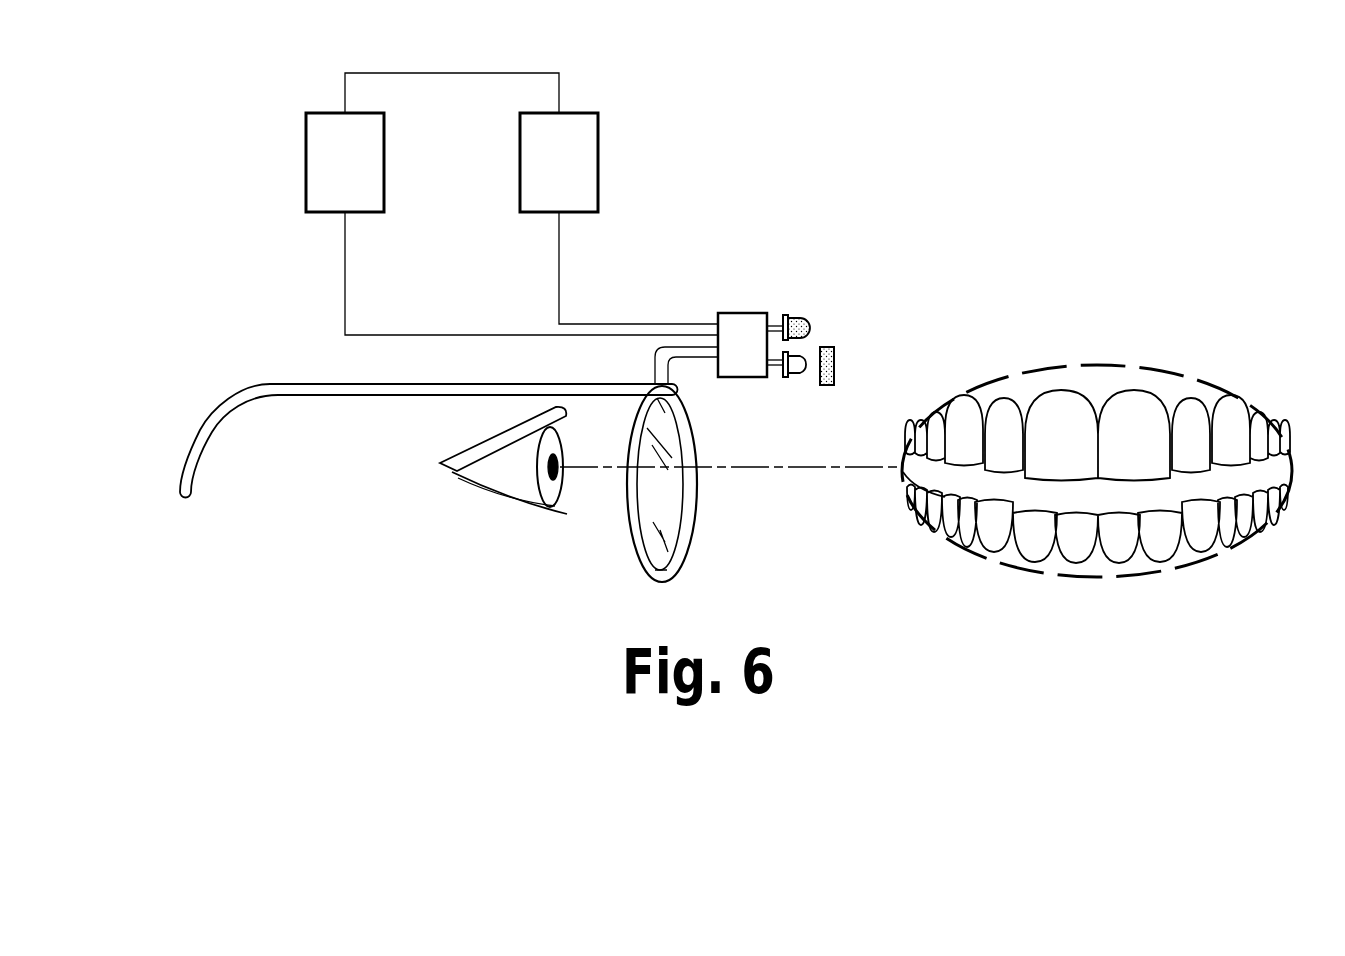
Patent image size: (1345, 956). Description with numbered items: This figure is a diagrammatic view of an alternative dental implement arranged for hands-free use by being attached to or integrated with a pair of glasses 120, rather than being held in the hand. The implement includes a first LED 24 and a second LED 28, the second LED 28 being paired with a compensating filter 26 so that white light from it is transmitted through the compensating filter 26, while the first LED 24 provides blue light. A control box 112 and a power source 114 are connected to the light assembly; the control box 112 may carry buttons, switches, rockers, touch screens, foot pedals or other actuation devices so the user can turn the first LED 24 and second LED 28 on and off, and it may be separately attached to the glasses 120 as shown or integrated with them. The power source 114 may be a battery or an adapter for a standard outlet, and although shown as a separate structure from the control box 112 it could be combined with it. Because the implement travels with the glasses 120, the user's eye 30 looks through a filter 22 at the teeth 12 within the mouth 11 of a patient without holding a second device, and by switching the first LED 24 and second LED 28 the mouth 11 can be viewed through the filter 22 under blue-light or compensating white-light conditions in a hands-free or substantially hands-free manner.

The mouth 11 is at (1238, 473).
The teeth 12 is at (1145, 404).
The filter 22 is at (657, 510).
The first LED 24 is at (801, 320).
The compensating filter 26 is at (838, 363).
The second LED 28 is at (797, 370).
The eye 30 is at (505, 485).
The control box 112 is at (575, 153).
The power source 114 is at (312, 153).
The glasses 120 is at (197, 440).